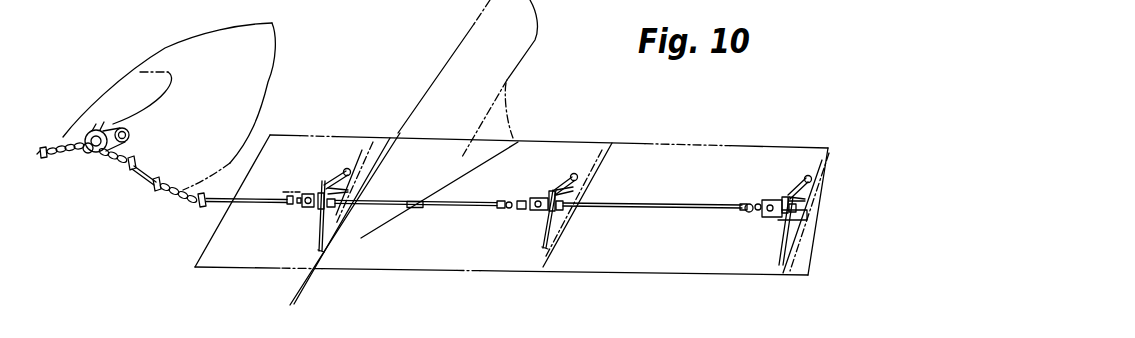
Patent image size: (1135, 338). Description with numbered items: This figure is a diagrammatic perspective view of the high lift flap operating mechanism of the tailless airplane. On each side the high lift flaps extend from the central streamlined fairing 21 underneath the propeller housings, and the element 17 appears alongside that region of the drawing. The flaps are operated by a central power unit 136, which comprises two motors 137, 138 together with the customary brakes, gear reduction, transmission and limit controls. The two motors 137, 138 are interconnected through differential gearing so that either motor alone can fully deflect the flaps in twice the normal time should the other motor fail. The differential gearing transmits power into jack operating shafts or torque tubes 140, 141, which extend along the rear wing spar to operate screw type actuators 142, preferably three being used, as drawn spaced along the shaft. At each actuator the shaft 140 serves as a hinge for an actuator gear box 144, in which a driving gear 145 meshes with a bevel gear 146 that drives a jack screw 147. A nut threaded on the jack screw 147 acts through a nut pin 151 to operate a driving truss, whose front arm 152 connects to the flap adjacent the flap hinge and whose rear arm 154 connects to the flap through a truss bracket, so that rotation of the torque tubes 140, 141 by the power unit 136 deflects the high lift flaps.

The pipe 17 is at (498, 61).
The central streamlined fairing 21 is at (236, 76).
The central power unit 136 is at (100, 112).
The motor 137 is at (132, 137).
The motor 138 is at (85, 128).
The jack operating shaft 140 is at (164, 197).
The jack operating shaft 141 is at (57, 155).
The screw type actuator 142 is at (330, 181).
The actuator gear box 144 is at (288, 208).
The driving gear 145 is at (300, 210).
The bevel gear 146 is at (314, 208).
The jack screw 147 is at (350, 172).
The nut pin 151 is at (325, 188).
The front arm 152 is at (327, 218).
The rear arm 154 is at (347, 190).